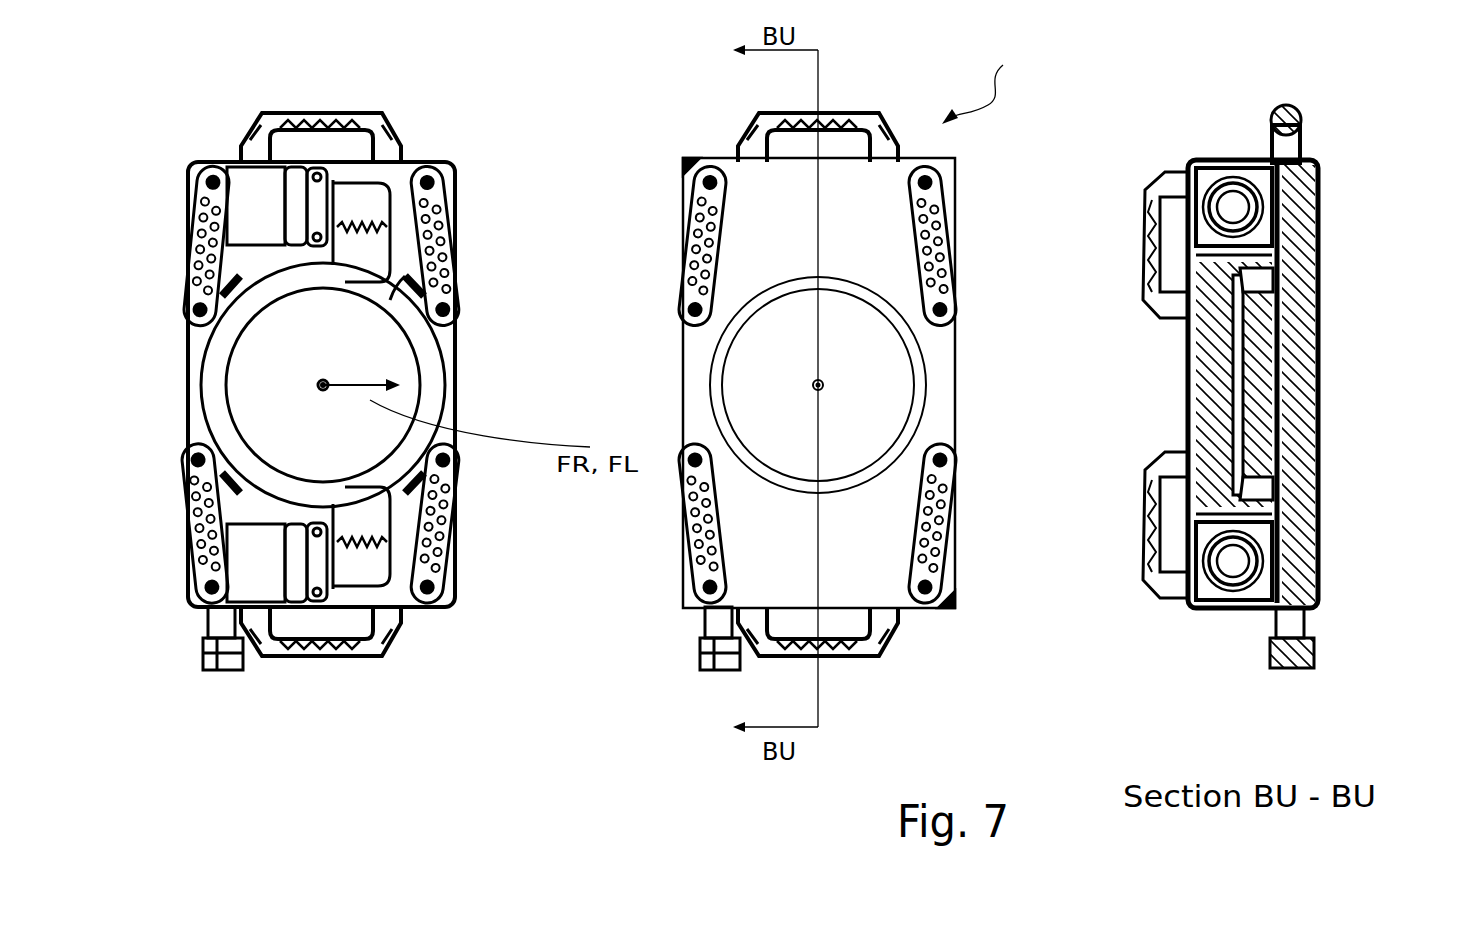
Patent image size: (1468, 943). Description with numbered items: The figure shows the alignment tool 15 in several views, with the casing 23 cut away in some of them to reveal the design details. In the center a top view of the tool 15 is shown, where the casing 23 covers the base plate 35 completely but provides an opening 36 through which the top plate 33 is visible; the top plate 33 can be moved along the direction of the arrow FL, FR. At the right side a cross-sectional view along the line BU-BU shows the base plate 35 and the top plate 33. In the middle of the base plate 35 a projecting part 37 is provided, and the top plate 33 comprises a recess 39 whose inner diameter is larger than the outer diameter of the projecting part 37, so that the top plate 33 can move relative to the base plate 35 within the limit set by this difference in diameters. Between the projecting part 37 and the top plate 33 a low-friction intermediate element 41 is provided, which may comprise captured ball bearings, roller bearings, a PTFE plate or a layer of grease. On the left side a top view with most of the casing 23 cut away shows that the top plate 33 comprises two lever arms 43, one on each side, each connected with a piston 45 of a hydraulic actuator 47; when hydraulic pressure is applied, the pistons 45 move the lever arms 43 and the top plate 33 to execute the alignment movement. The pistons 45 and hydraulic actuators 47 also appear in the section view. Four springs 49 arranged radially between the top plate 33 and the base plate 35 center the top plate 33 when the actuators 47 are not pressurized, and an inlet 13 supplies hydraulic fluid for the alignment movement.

The inlet 13 is at (213, 670).
The tool 15 is at (977, 79).
The casing 23 is at (872, 250).
The top plate 33 is at (338, 366).
The base plate 35 is at (1290, 378).
The opening 36 is at (387, 300).
The projecting part 37 is at (1260, 402).
The recess 39 is at (1318, 212).
The low-friction intermediate element 41 is at (1245, 448).
The lever arm 43 is at (362, 205).
The piston 45 is at (356, 178).
The hydraulic actuator 47 is at (262, 213).
The spring 49 is at (440, 250).